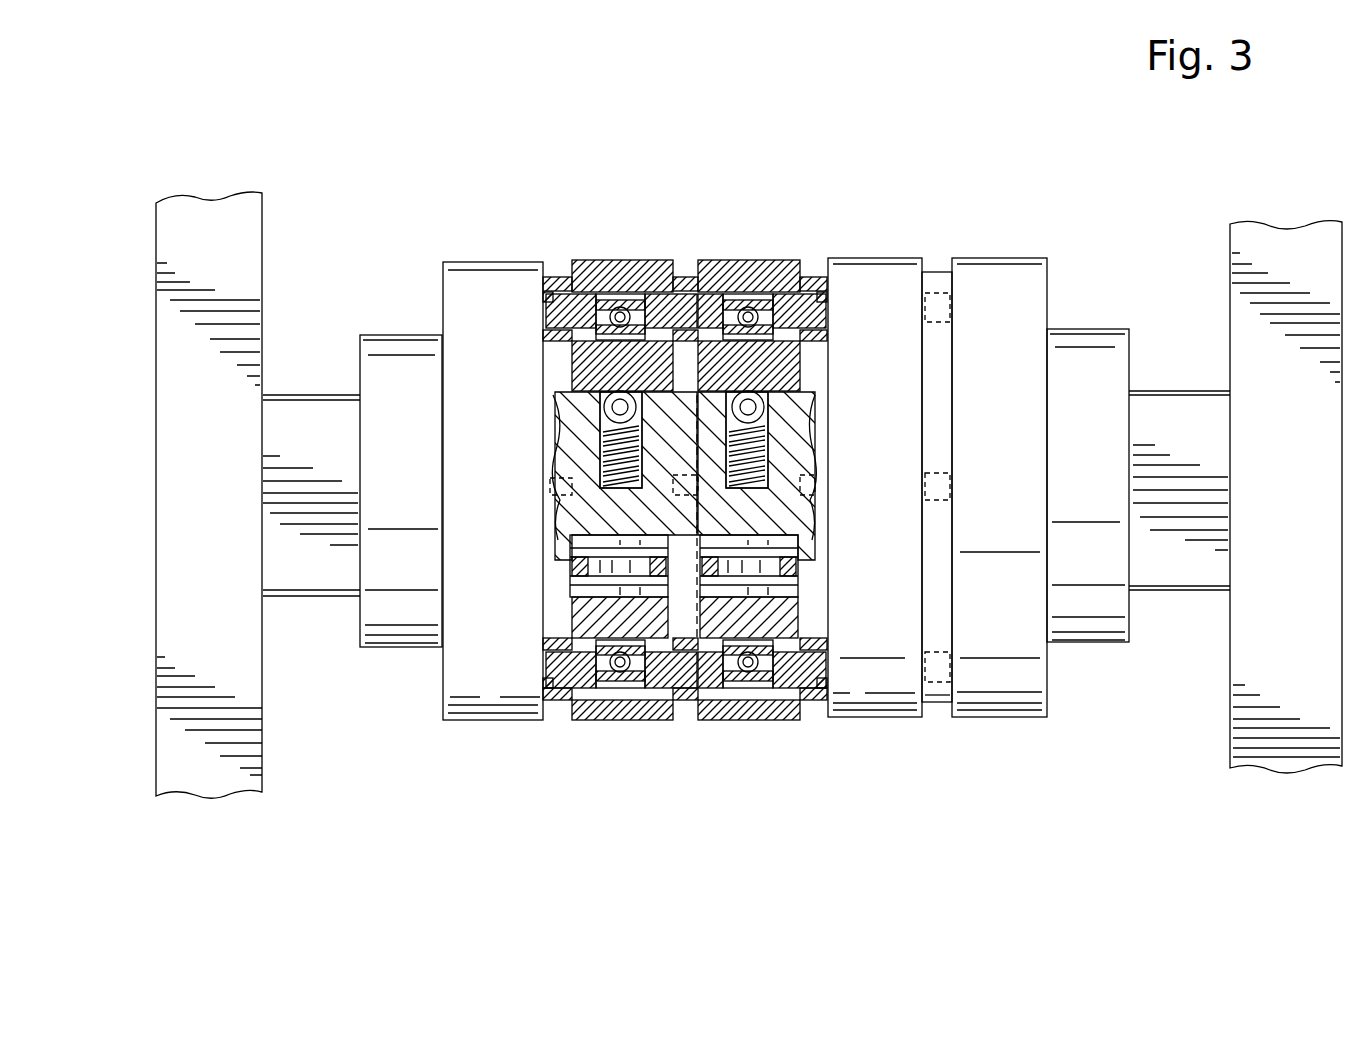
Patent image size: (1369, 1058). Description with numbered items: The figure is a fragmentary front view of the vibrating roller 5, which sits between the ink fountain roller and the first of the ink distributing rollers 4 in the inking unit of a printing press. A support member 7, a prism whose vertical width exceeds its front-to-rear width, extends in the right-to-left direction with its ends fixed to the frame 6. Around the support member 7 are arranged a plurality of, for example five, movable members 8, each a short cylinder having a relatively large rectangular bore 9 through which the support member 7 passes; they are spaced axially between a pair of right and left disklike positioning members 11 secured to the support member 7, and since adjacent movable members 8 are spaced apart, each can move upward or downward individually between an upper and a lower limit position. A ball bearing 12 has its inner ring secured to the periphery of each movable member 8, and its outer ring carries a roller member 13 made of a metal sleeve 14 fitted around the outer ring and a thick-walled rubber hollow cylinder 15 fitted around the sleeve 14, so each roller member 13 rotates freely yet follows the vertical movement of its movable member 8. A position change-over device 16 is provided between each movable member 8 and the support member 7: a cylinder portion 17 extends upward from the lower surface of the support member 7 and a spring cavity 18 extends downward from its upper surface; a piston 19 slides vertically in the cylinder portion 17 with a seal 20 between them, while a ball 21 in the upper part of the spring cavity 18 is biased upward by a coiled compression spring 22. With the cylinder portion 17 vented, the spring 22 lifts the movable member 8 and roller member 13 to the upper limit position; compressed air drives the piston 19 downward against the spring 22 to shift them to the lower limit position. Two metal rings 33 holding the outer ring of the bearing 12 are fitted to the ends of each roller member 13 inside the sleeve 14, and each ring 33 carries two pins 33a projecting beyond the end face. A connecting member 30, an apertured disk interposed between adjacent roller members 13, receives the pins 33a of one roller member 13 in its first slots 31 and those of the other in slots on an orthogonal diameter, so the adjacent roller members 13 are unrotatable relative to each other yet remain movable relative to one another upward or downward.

The distributing roller 4 is at (698, 125).
The vibrating roller 5 is at (1042, 719).
The frame 6 is at (262, 777).
The support member 7 is at (1180, 391).
The movable member 8 is at (572, 360).
The rectangular bore 9 is at (560, 400).
The positioning member 11 is at (362, 628).
The ball bearing 12 is at (585, 720).
The roller member 13 is at (470, 262).
The metal sleeve 14 is at (632, 260).
The rubber hollow cylinder 15 is at (610, 260).
The position change-over device 16 is at (580, 570).
The cylinder portion 17 is at (677, 595).
The spring cavity 18 is at (602, 440).
The piston 19 is at (572, 590).
The seal 20 is at (572, 560).
The ball 21 is at (604, 407).
The coiled compression spring 22 is at (600, 470).
The connecting member 30 is at (937, 272).
The first slot 31 is at (686, 277).
The metal ring 33 is at (585, 260).
The pin 33a is at (718, 260).